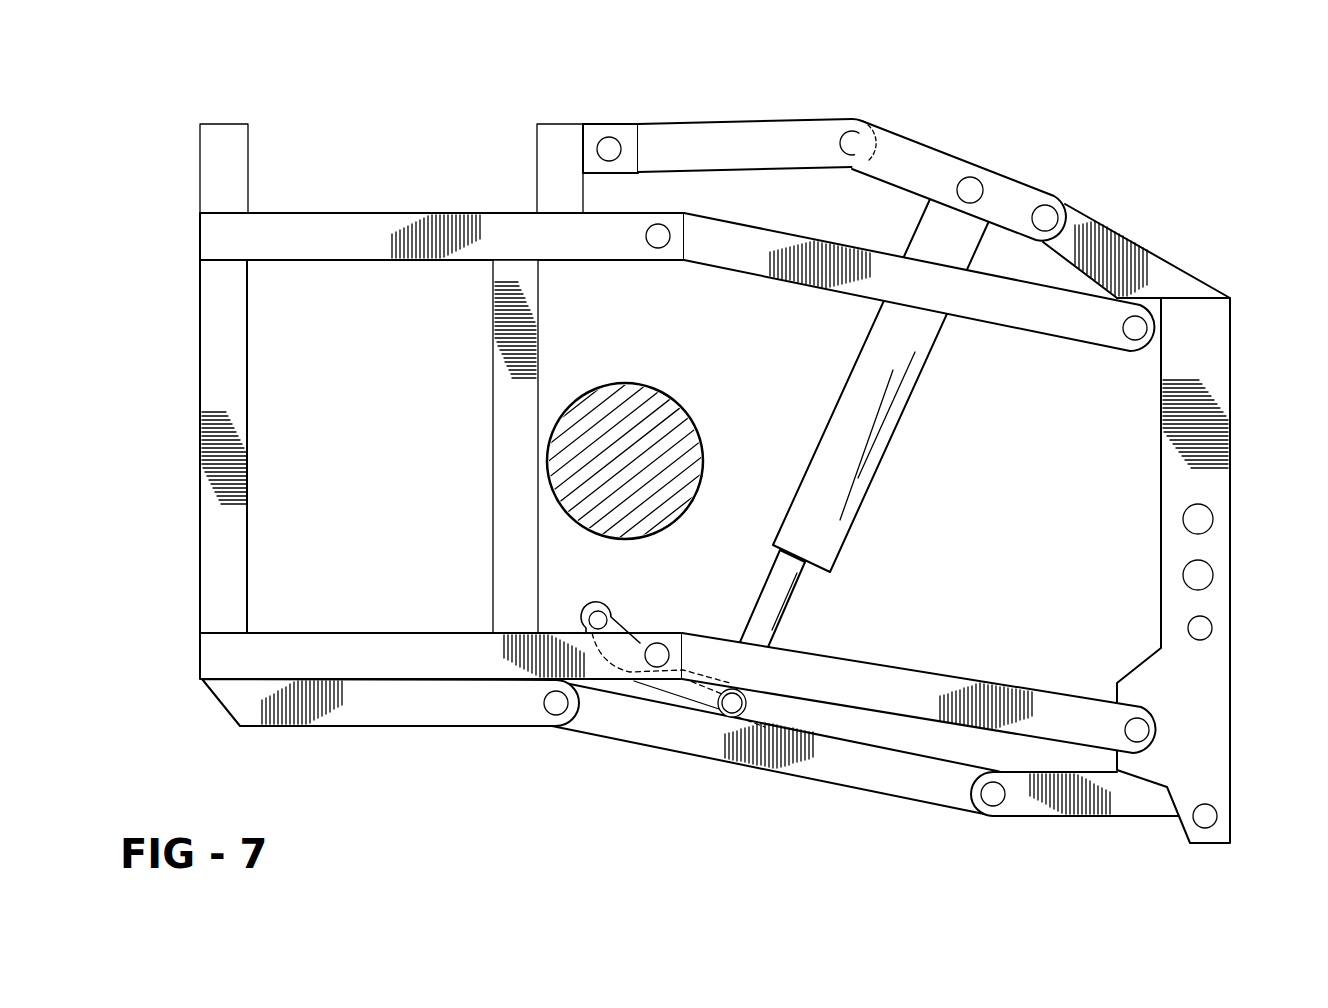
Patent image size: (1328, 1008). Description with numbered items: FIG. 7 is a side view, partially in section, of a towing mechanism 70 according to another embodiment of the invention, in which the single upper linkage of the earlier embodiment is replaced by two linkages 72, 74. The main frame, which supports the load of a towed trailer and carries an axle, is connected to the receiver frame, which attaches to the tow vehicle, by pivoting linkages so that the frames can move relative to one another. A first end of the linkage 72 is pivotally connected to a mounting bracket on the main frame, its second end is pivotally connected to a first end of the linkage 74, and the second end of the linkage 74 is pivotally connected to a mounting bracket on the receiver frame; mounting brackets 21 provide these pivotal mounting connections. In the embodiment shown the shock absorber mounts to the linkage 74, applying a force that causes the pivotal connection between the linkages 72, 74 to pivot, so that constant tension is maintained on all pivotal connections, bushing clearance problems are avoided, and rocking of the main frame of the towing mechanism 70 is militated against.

The towing mechanism 70 is at (720, 463).
The mounting bracket 21 is at (1170, 280).
The linkage 72 is at (700, 124).
The linkage 74 is at (920, 141).